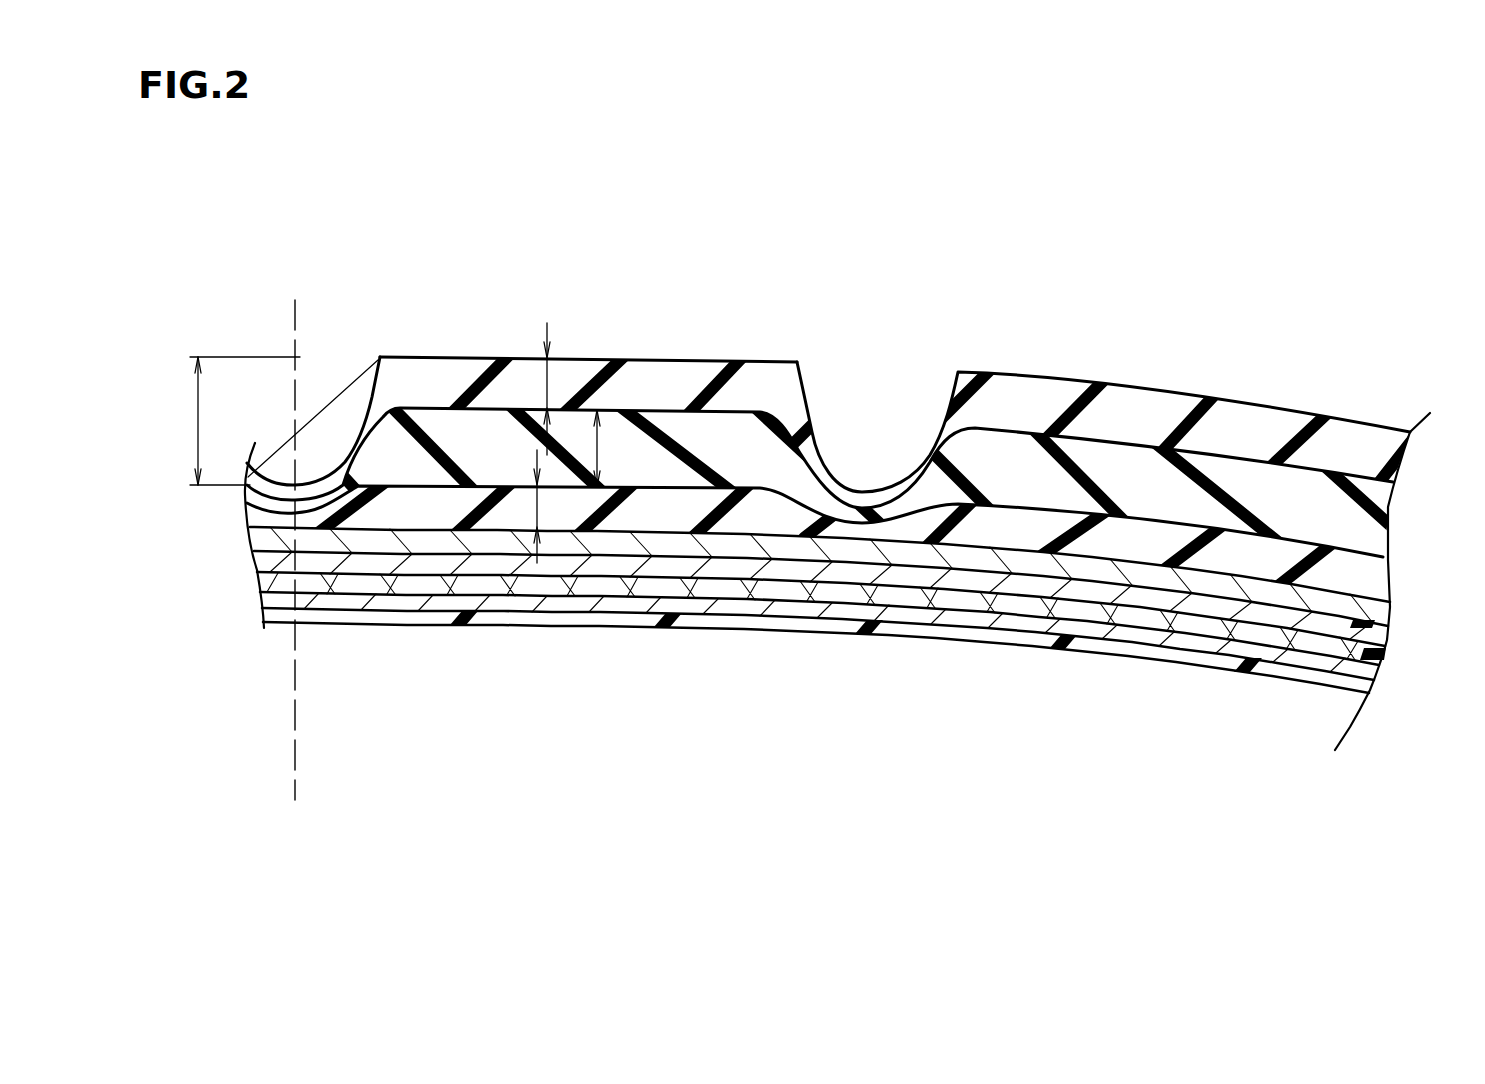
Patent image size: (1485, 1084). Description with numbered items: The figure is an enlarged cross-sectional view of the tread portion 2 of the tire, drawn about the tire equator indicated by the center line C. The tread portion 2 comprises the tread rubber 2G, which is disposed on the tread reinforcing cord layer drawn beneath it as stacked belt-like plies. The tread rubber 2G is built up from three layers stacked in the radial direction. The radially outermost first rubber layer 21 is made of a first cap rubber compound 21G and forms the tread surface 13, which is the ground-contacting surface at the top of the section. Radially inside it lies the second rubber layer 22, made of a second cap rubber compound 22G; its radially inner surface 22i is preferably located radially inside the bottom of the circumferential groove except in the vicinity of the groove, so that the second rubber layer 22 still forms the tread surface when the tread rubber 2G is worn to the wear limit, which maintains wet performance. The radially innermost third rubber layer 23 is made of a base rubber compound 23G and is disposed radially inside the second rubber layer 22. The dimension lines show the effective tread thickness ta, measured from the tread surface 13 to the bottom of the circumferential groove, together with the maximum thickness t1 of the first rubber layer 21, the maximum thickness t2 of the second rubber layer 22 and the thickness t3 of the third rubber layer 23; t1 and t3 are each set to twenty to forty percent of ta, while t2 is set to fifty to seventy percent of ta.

The tread portion 2 is at (413, 338).
The tread surface 13 is at (475, 355).
The first rubber layer 21 is at (1120, 415).
The first cap rubber compound 21G is at (1000, 407).
The second rubber layer 22 is at (1135, 475).
The second cap rubber compound 22G is at (1010, 473).
The radially inner surface of the second rubber layer 22i is at (903, 523).
The third rubber layer 23 is at (672, 512).
The base rubber compound 23G is at (783, 520).
The tread rubber 2G is at (410, 468).
The tire equator C is at (292, 536).
The effective tread thickness ta is at (231, 421).
The maximum thickness of the first rubber layer t1 is at (548, 382).
The maximum thickness of the second rubber layer t2 is at (600, 433).
The thickness of the third rubber layer t3 is at (523, 515).